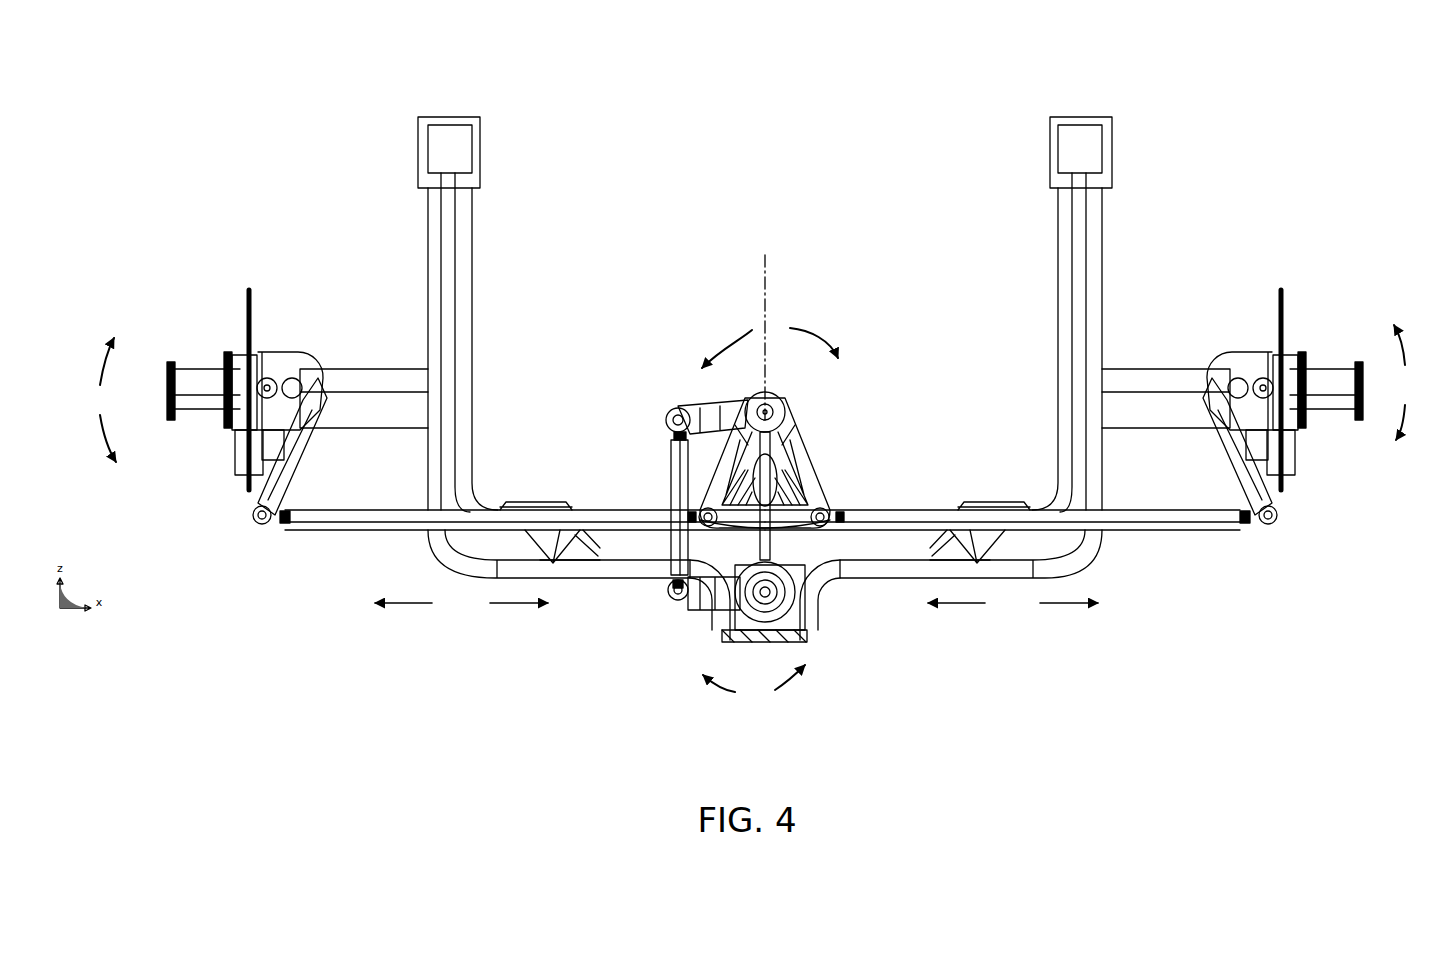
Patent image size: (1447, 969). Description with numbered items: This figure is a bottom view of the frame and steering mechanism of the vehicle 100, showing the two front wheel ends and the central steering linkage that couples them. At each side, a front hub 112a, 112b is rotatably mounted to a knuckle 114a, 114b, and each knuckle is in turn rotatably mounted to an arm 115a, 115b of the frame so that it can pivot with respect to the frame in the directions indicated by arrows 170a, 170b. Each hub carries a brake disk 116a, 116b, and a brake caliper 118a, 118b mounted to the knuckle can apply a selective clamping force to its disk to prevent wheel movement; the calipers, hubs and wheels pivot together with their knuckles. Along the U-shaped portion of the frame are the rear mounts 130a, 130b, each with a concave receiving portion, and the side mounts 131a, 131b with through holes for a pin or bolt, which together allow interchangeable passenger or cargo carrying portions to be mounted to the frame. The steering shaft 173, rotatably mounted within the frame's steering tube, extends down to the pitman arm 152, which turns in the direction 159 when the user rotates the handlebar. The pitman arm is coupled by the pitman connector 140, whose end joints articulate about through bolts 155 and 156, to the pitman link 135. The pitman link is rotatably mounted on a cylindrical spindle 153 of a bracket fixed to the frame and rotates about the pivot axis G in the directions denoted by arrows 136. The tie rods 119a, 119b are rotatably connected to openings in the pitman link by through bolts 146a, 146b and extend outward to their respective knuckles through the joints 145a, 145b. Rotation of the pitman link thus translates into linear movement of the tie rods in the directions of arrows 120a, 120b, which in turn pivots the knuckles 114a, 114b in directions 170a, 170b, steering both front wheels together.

The vehicle 100 is at (1062, 745).
The hub 112a is at (1338, 383).
The hub 112b is at (203, 368).
The knuckle 114a is at (1237, 452).
The knuckle 114b is at (292, 450).
The arm 115a is at (1168, 380).
The arm 115b is at (408, 380).
The brake disk 116a is at (1285, 295).
The brake disk 116b is at (247, 317).
The brake caliper 118a is at (1290, 458).
The brake caliper 118b is at (235, 470).
The tie rod 119a is at (1127, 505).
The tie rod 119b is at (322, 520).
The direction arrow 120a is at (1013, 603).
The direction arrow 120b is at (461, 603).
The rear mount 130a is at (992, 500).
The rear mount 130b is at (548, 500).
The side mount 131a is at (1050, 153).
The side mount 131b is at (481, 152).
The pitman link 135 is at (805, 482).
The rotation direction arrows 136 is at (770, 342).
The pitman connector 140 is at (683, 550).
The right ball joint 145a is at (1280, 527).
The left ball joint 145b is at (258, 528).
The through bolt 146a is at (822, 522).
The through bolt 146b is at (708, 513).
The pitman arm 152 is at (698, 637).
The cylindrical spindle 153 is at (763, 405).
The through bolt 155 is at (670, 607).
The through bolt 156 is at (678, 412).
The rotation direction 159 is at (754, 687).
The rotation direction arrow 170a is at (1408, 382).
The rotation direction arrow 170b is at (100, 400).
The steering shaft 173 is at (772, 602).
The pivot axis G is at (770, 270).